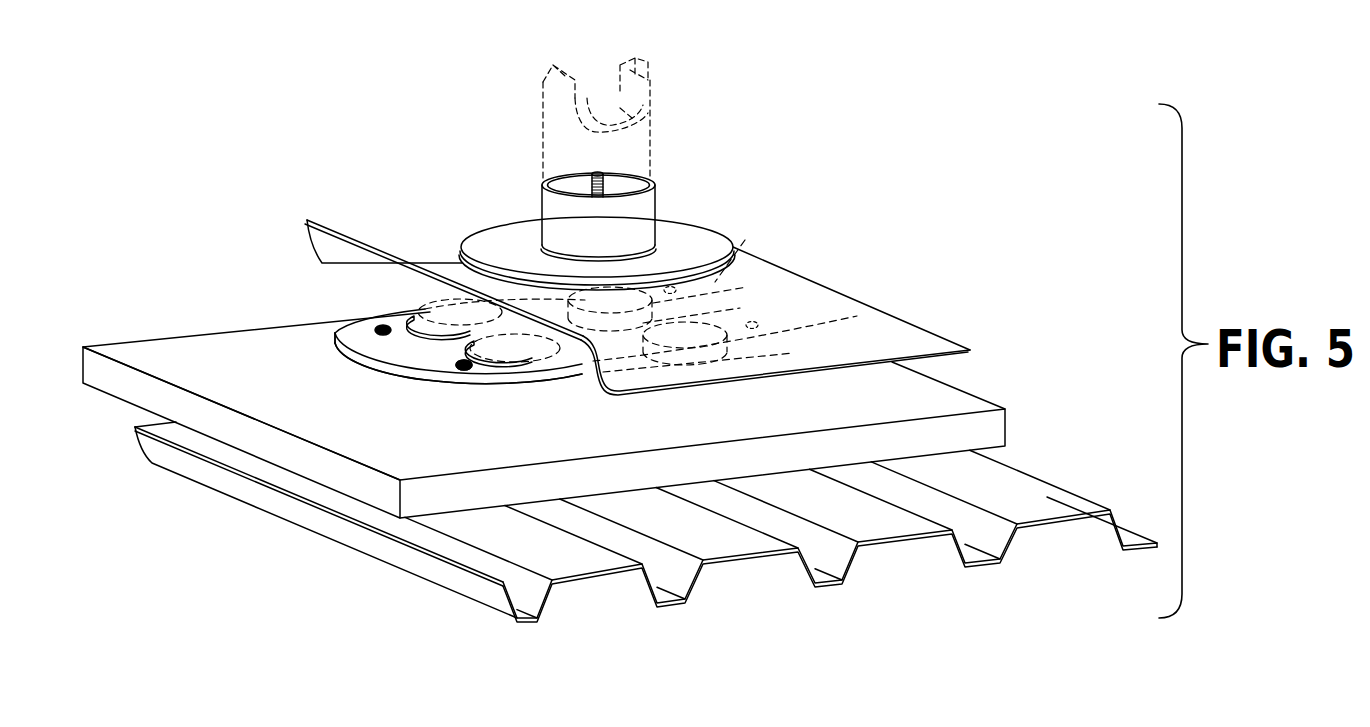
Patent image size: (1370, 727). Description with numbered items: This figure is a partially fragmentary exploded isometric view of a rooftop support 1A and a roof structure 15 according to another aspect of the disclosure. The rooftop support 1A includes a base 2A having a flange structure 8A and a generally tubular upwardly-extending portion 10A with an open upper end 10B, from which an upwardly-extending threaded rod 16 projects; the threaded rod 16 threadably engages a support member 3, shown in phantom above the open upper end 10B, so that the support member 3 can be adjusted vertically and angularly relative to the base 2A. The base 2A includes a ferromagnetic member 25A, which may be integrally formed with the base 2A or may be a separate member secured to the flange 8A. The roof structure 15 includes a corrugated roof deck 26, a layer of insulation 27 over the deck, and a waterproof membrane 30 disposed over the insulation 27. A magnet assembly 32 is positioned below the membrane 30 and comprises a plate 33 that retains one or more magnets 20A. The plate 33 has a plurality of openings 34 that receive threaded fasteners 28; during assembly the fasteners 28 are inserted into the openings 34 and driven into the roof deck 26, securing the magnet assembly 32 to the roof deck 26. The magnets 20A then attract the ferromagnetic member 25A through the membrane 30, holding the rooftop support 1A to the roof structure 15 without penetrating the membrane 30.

The rooftop support 1A is at (569, 170).
The base 2A is at (569, 170).
The support member 3 is at (657, 92).
The flange structure 8A is at (495, 241).
The upwardly-extending portion 10A is at (645, 203).
The open upper end 10B is at (563, 173).
The roof structure 15 is at (620, 462).
The threaded rod 16 is at (600, 174).
The magnets 20A is at (418, 314).
The ferromagnetic member 25A is at (746, 240).
The roof deck 26 is at (1029, 500).
The insulation layer 27 is at (1010, 420).
The threaded fasteners 28 is at (384, 330).
The membrane 30 is at (907, 343).
The magnet assembly 32 is at (380, 383).
The plate 33 is at (420, 386).
The openings 34 is at (336, 346).